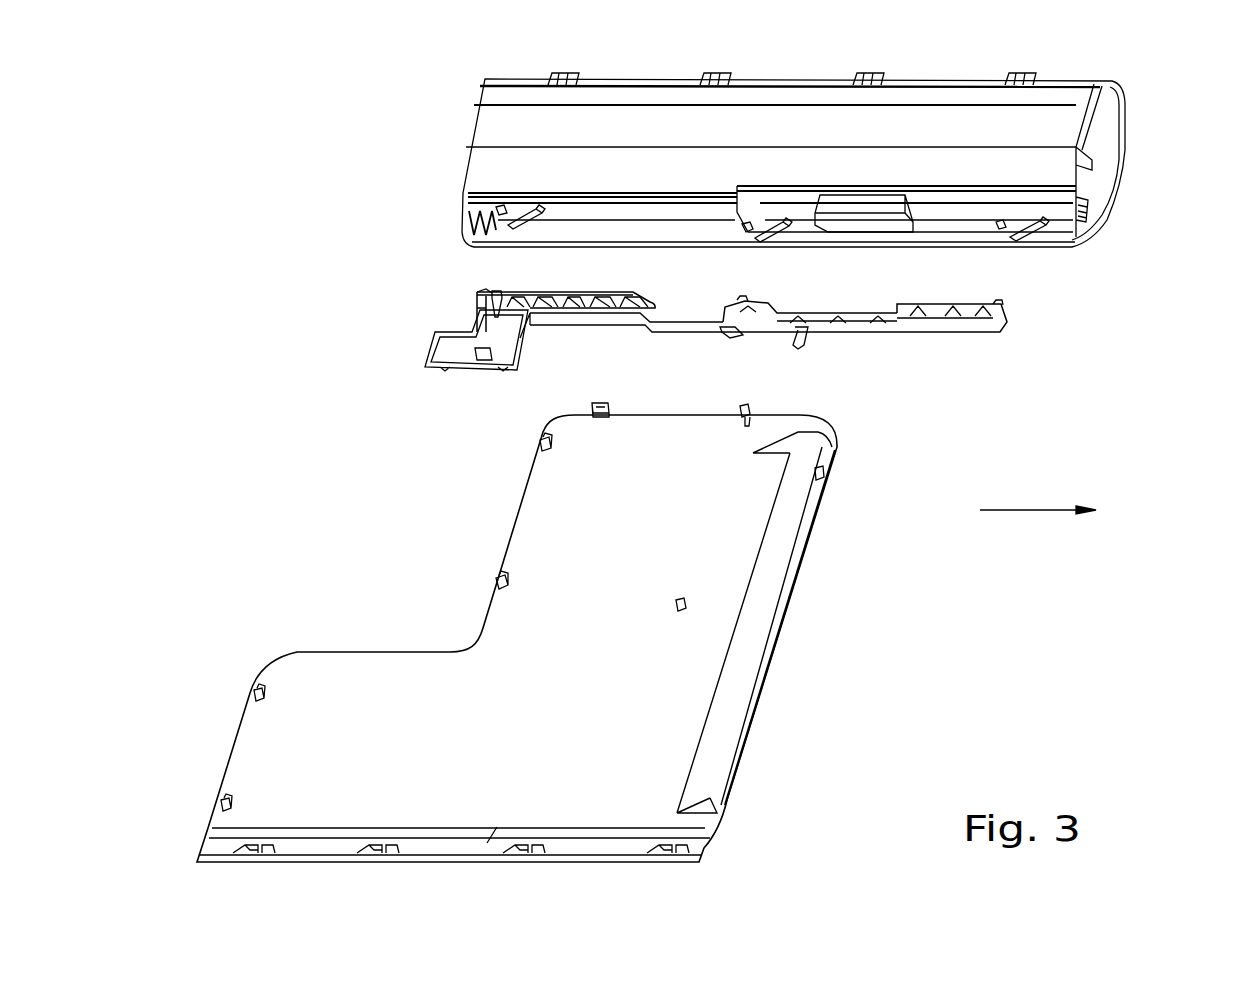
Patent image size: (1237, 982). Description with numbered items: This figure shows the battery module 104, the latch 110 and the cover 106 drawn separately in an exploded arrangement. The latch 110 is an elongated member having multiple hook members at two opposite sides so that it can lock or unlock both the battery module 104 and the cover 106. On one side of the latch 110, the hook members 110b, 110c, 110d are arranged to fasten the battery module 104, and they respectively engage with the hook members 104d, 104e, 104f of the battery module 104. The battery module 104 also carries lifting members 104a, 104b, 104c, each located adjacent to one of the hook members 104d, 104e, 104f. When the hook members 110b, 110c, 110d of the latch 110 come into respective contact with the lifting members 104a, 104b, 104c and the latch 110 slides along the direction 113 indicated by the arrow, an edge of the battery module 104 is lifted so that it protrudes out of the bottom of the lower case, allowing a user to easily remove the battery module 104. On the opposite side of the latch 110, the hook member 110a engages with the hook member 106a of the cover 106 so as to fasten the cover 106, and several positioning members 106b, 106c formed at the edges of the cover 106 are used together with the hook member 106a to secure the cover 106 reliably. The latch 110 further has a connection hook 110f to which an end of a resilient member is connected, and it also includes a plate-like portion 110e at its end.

The battery module 104 is at (1062, 165).
The lifting member 104a is at (1045, 230).
The lifting member 104b is at (788, 226).
The lifting member 104c is at (533, 207).
The hook member 104d is at (1004, 224).
The hook member 104e is at (747, 222).
The hook member 104f is at (490, 225).
The cover 106 is at (783, 598).
The hook member 106a is at (755, 413).
The positioning member 106b is at (598, 418).
The positioning member 106c is at (255, 693).
The latch 110 is at (975, 330).
The hook member 110a is at (806, 340).
The hook member 110b is at (1000, 301).
The hook member 110c is at (741, 299).
The hook member 110d is at (485, 291).
The bracket plate 110e is at (443, 350).
The connection hook 110f is at (735, 332).
The direction 113 is at (1029, 512).